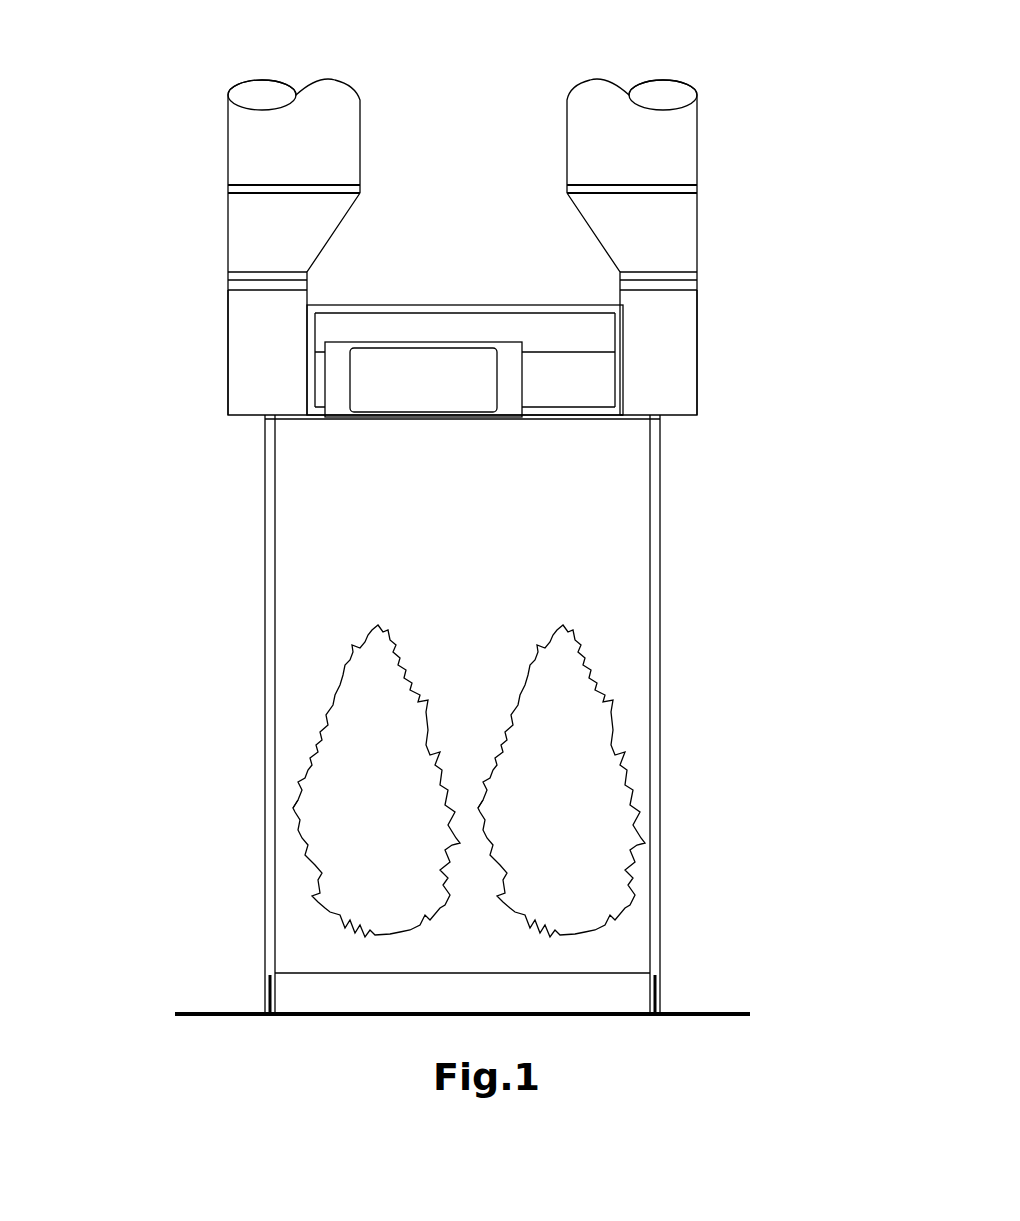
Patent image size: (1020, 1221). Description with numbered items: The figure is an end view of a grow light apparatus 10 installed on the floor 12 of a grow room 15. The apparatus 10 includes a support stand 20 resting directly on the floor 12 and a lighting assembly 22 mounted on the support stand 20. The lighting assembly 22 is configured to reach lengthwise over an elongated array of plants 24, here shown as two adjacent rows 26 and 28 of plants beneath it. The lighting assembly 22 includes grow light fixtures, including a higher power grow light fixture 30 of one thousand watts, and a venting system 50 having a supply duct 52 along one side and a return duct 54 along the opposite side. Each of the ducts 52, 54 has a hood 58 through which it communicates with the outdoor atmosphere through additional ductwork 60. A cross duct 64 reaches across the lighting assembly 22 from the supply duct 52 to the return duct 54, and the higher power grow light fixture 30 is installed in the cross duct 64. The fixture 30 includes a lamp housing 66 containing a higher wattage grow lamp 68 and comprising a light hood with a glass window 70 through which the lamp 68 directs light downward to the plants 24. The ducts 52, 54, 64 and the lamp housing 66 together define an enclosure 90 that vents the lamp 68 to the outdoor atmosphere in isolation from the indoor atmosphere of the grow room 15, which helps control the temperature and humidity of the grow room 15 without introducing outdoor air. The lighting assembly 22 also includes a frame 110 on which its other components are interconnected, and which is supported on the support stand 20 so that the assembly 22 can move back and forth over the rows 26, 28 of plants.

The grow light apparatus 10 is at (112, 156).
The floor 12 is at (207, 1012).
The grow room 15 is at (153, 693).
The support stand 20 is at (254, 785).
The lighting assembly 22 is at (166, 274).
The plants 24 is at (330, 832).
The first row of plants 26 is at (363, 609).
The second row of plants 28 is at (580, 614).
The higher power grow light fixture 30 is at (427, 328).
The venting system 50 is at (220, 189).
The supply duct 52 is at (228, 372).
The return duct 54 is at (698, 386).
The hood 58 is at (228, 243).
The additional ductwork 60 is at (262, 97).
The cross duct 64 is at (318, 352).
The lamp housing 66 is at (462, 342).
The higher wattage grow lamp 68 is at (488, 348).
The glass window 70 is at (388, 418).
The enclosure 90 is at (714, 300).
The frame 110 is at (302, 420).